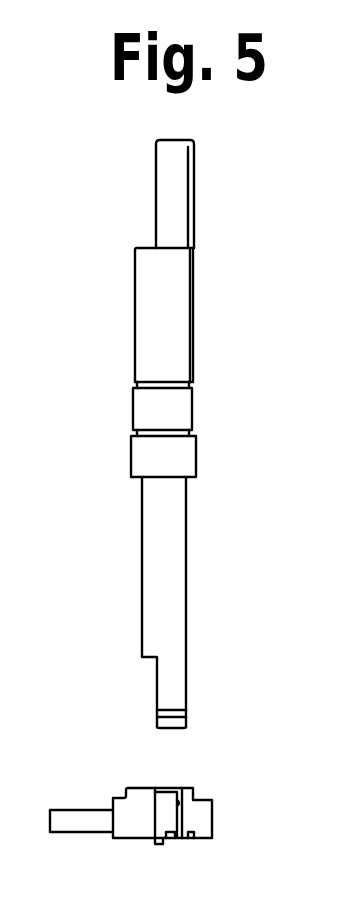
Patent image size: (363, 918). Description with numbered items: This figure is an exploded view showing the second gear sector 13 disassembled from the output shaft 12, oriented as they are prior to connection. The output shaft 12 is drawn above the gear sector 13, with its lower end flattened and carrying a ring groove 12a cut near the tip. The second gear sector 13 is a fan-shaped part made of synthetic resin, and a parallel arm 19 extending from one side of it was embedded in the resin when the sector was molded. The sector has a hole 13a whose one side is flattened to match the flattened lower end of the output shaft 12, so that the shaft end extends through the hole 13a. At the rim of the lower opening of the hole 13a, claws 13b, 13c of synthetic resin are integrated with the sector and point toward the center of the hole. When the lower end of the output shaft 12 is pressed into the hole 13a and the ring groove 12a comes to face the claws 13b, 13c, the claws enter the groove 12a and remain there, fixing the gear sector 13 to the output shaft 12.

The output shaft 12 is at (195, 180).
The ring groove 12a is at (181, 712).
The second gear sector 13 is at (191, 816).
The hole 13a is at (182, 803).
The claw 13b is at (158, 845).
The claw 13c is at (191, 840).
The parallel arm 19 is at (73, 810).